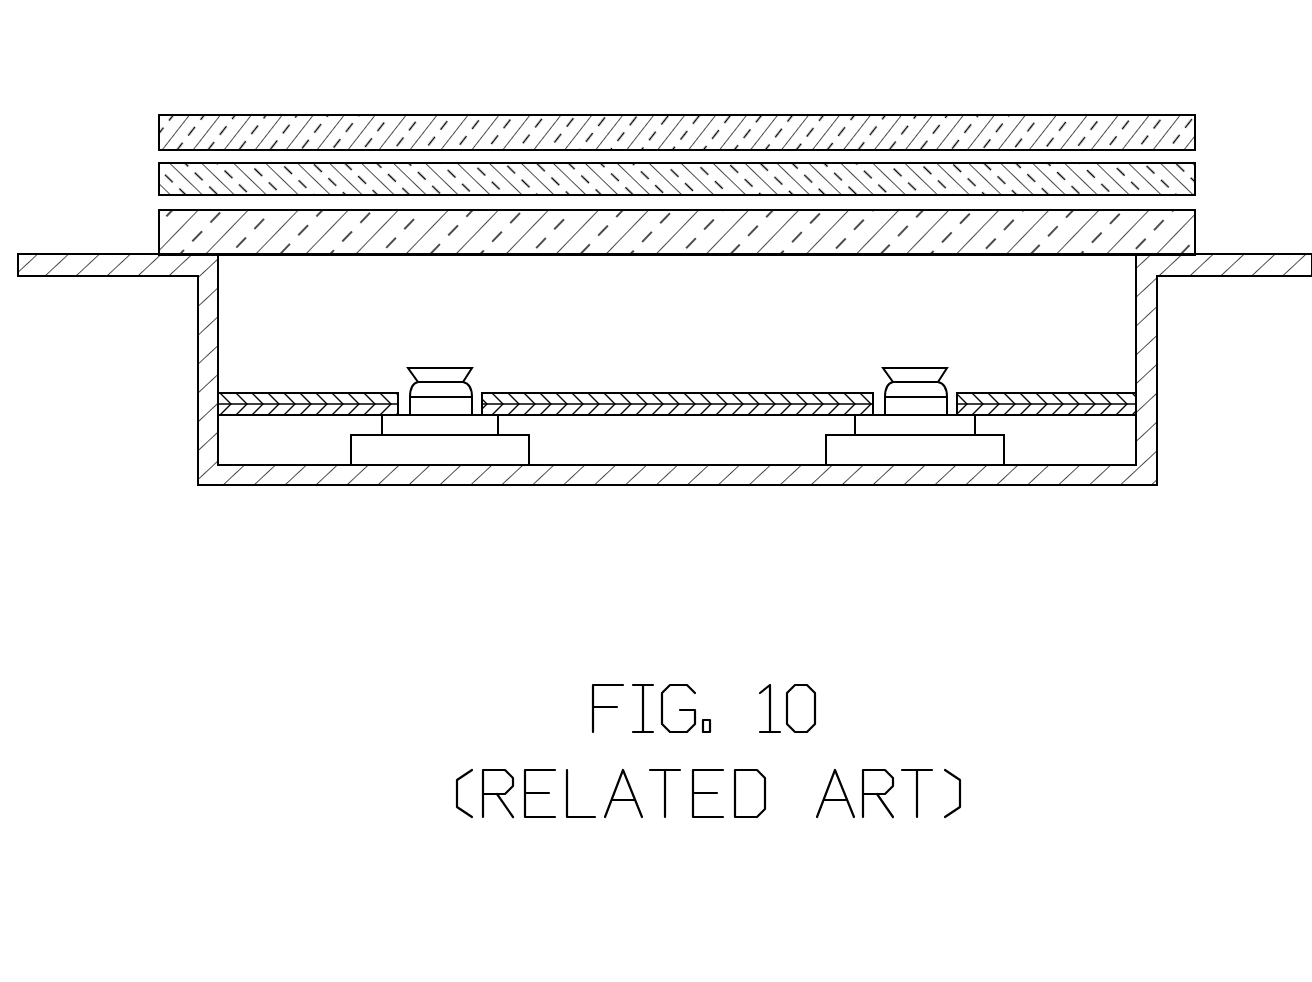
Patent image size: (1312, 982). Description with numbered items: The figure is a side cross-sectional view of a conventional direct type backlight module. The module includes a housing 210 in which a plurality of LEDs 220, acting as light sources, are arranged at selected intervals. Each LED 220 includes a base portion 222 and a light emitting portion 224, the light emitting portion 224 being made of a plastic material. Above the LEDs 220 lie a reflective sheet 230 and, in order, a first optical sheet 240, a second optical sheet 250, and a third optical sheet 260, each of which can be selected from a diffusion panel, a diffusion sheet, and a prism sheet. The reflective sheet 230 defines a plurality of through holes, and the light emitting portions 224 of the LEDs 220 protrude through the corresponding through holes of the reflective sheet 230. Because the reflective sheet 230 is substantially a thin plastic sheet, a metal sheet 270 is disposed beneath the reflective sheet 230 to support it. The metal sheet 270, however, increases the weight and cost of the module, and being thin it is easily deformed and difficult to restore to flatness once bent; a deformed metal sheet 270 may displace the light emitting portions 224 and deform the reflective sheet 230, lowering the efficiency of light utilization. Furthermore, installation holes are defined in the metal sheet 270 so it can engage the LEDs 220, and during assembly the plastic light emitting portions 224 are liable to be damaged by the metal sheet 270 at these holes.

The housing 210 is at (208, 347).
The LED 220 is at (668, 495).
The base portion 222 is at (520, 577).
The light emitting portion 224 is at (483, 542).
The reflective sheet 230 is at (1110, 392).
The first optical sheet 240 is at (1225, 228).
The second optical sheet 250 is at (1225, 175).
The third optical sheet 260 is at (1225, 123).
The metal sheet 270 is at (1120, 412).